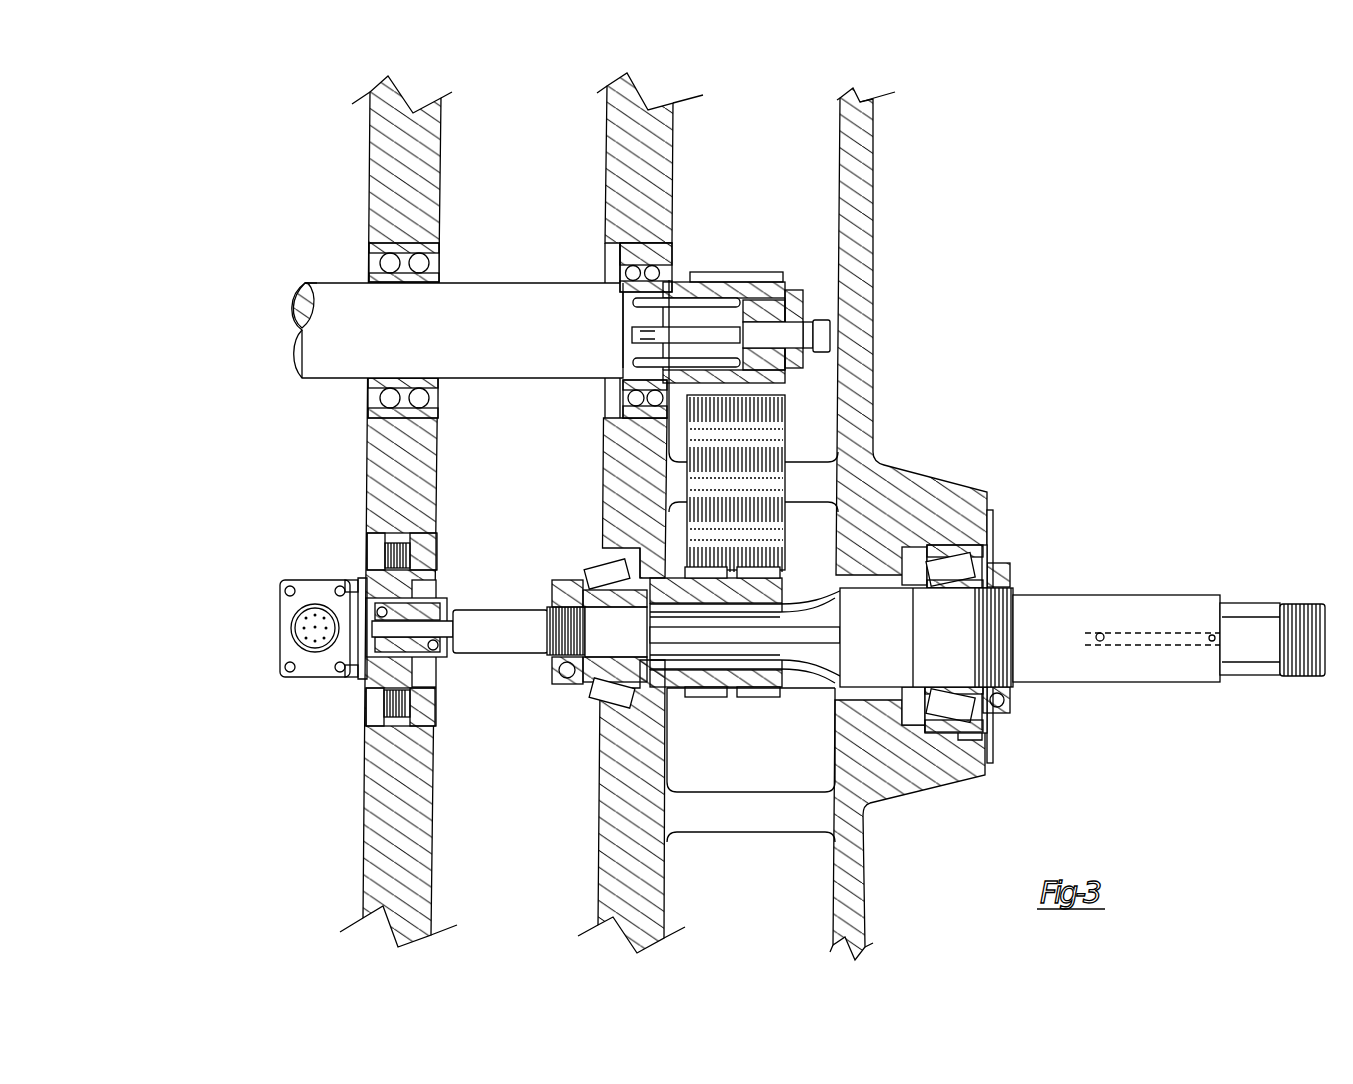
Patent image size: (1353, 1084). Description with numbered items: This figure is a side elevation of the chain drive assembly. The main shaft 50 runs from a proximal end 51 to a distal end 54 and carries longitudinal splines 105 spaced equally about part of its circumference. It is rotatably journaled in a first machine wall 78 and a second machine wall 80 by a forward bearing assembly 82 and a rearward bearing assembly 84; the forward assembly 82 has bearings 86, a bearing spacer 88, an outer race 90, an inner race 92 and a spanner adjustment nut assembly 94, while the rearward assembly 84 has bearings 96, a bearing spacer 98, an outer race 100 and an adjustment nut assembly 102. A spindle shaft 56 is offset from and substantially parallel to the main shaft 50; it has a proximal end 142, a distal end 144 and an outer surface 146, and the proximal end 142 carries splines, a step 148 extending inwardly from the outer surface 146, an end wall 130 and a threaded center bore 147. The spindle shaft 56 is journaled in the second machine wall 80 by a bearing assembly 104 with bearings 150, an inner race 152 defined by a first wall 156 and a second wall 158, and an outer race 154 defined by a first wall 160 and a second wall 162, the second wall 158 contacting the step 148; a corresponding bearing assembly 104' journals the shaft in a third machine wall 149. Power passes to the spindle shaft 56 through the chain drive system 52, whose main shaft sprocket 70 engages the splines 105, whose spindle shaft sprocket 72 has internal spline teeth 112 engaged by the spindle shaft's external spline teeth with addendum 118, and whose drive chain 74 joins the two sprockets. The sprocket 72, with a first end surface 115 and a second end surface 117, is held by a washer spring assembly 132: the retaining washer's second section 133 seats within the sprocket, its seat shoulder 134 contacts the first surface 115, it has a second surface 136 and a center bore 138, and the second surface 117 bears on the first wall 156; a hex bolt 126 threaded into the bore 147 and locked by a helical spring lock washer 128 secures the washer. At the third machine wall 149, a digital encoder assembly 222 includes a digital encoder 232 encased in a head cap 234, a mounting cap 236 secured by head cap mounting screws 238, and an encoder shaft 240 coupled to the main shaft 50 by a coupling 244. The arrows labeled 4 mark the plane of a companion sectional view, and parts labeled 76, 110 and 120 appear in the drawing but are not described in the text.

The section line 4- 4 is at (683, 217).
The main shaft 50 is at (1072, 613).
The proximal end 51 is at (1217, 590).
The chain drive system 52 is at (738, 160).
The distal end 54 is at (467, 658).
The spindle shaft 56 is at (467, 320).
The main shaft sprocket 70 is at (770, 685).
The spindle shaft sprocket 72 is at (758, 287).
The drive chain 74 is at (705, 511).
The rotor core shaft 76 is at (740, 650).
The first machine wall 78 is at (857, 138).
The second machine wall 80 is at (645, 150).
The forward bearing assembly 82 is at (590, 565).
The rearward bearing assembly 84 is at (1007, 521).
The bearings 86 is at (605, 708).
The bearing spacer 88 is at (592, 665).
The outer race 90 is at (620, 548).
The inner race 92 is at (570, 578).
The spanner adjustment nut assembly 94 is at (548, 692).
The bearings 96 is at (948, 705).
The bearing spacer 98 is at (1000, 571).
The outer race 100 is at (925, 550).
The adjustment nut assembly 102 is at (1017, 695).
The bearing assembly 104 is at (600, 315).
The bearing assembly 104' is at (371, 224).
The longitudinal splines 105 is at (803, 679).
The rotor spokes 110 is at (697, 650).
The spline teeth 112 is at (707, 317).
The first end surface 115 is at (868, 437).
The second end surface 117 is at (655, 379).
The addendum 118 is at (670, 327).
The housing wall 120 is at (818, 373).
The hex bolt 126 is at (826, 335).
The helical spring lock washer 128 is at (820, 337).
The end wall 130 is at (752, 313).
The washer spring assembly 132 is at (813, 305).
The second section 133 is at (775, 293).
The seat shoulder 134 is at (768, 385).
The second surface 136 is at (690, 336).
The center bore 138 is at (740, 390).
The proximal end 142 is at (940, 357).
The distal end 144 is at (283, 295).
The outer surface 146 is at (452, 278).
The threaded center bore 147 is at (825, 333).
The step 148 is at (633, 303).
The third machine wall 149 is at (418, 158).
The bearings 150 is at (633, 412).
The inner race 152 is at (630, 397).
The outer race 154 is at (630, 418).
The first wall 156 is at (606, 253).
The second wall 158 is at (616, 290).
The first wall 160 is at (675, 260).
The second wall 162 is at (606, 291).
The digital encoder assembly 222 is at (264, 625).
The digital encoder 232 is at (283, 633).
The head cap 234 is at (285, 668).
The mounting cap 236 is at (350, 585).
The head cap mounting screws 238 is at (333, 660).
The encoder shaft 240 is at (383, 632).
The coupling 244 is at (440, 612).